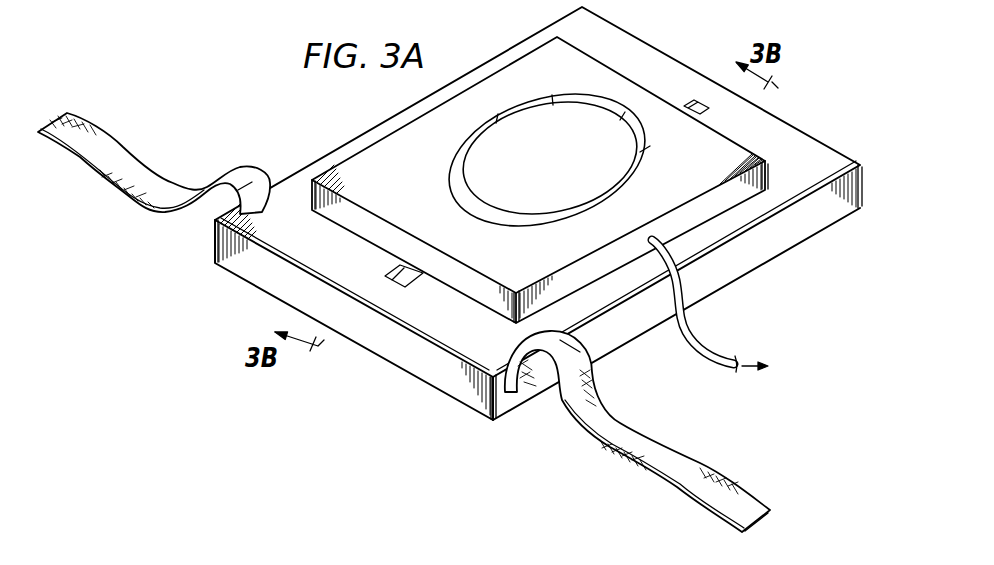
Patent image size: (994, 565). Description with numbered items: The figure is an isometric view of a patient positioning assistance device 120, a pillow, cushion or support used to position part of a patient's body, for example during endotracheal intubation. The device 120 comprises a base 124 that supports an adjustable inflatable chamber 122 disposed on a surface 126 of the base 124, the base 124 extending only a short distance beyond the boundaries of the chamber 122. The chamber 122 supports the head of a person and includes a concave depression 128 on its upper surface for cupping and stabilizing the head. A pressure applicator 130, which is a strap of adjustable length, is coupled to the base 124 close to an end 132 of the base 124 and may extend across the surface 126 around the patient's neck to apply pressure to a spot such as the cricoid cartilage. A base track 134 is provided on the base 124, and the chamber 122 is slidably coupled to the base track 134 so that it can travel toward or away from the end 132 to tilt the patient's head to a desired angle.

The patient positioning assistance device 120 is at (454, 269).
The chamber 122 is at (540, 263).
The base 124 is at (240, 268).
The surface 126 is at (820, 150).
The concave depression 128 is at (467, 178).
The pressure applicator 130 is at (140, 173).
The end 132 is at (420, 370).
The base track 134 is at (700, 100).